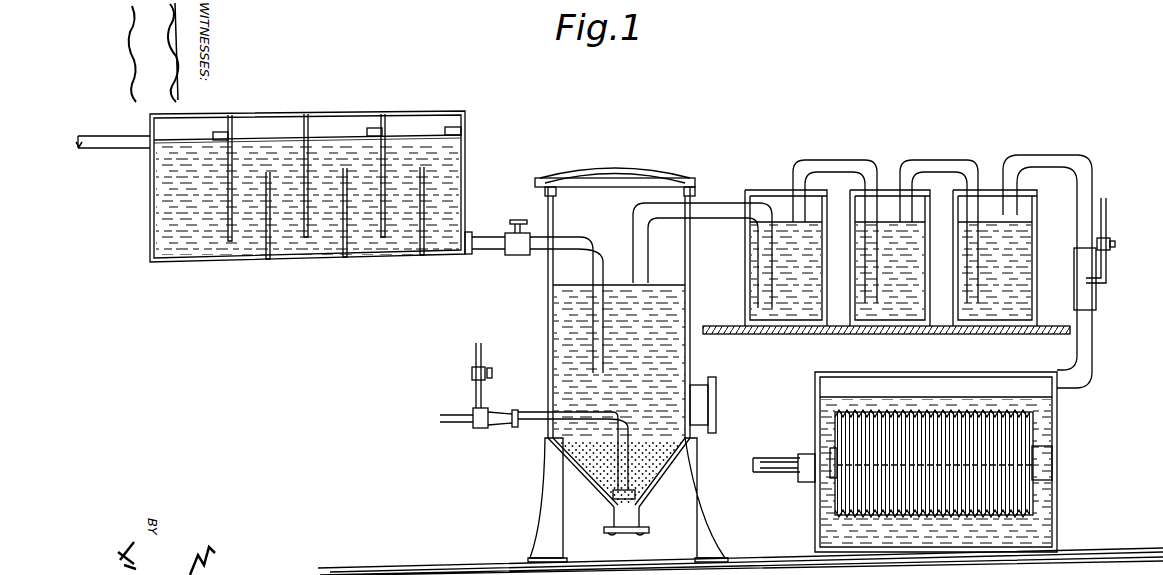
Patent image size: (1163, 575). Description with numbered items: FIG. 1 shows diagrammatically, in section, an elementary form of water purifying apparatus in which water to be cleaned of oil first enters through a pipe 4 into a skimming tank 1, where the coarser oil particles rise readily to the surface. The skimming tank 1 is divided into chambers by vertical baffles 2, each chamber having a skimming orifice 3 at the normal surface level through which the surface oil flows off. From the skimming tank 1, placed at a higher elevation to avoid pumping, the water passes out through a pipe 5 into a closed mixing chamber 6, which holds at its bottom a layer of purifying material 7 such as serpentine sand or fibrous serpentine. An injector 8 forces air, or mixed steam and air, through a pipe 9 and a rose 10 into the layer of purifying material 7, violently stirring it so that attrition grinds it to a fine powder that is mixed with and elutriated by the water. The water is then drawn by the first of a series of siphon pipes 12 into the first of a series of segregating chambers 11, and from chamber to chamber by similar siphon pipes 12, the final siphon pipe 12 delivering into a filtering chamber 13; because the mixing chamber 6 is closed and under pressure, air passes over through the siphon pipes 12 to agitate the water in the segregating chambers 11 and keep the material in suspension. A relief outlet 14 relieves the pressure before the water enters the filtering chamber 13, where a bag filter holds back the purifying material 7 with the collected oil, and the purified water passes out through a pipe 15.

The skimming tank 1 is at (413, 110).
The vertical baffles 2 is at (233, 213).
The skimming orifice 3 is at (223, 133).
The pipe 4 is at (113, 138).
The pipe 5 is at (497, 244).
The mixing chamber 6 is at (628, 365).
The layer of purifying material 7 is at (604, 482).
The injector 8 is at (479, 395).
The pipe 9 is at (582, 410).
The rose 10 is at (650, 493).
The segregating chambers 11 is at (766, 201).
The siphon pipes 12 is at (714, 208).
The filtering chamber 13 is at (980, 387).
The relief outlet 14 is at (1109, 257).
The pipe 15 is at (772, 459).